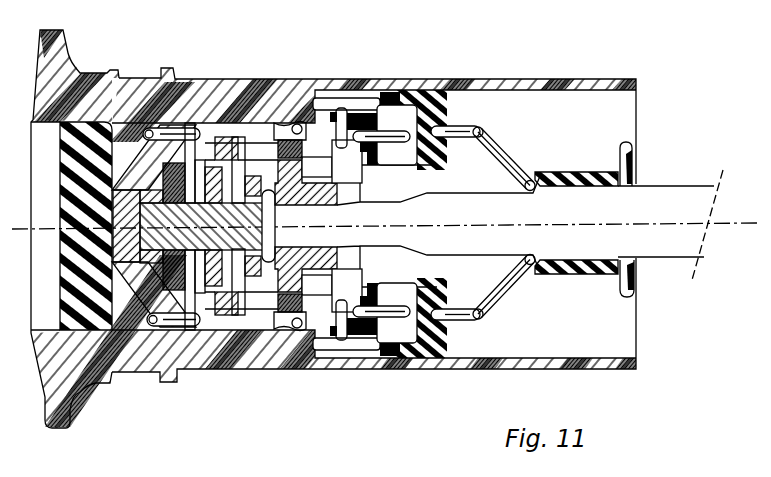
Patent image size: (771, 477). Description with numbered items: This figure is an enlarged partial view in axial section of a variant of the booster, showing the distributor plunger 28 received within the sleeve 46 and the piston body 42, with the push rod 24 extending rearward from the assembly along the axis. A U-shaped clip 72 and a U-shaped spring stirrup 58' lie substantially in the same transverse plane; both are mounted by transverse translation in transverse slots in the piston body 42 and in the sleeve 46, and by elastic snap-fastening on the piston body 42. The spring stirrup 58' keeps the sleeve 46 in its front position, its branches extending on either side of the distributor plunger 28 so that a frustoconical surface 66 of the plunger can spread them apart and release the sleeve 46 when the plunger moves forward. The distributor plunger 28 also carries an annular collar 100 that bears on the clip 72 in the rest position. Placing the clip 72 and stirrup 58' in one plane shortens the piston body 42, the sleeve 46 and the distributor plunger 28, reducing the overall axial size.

The push rod 24 is at (675, 186).
The distributor plunger 28 is at (170, 207).
The piston body 42 is at (187, 78).
The sleeve 46 is at (284, 112).
The spring stirrup 58' is at (326, 293).
The frustoconical surface 66 is at (263, 255).
The clip 72 is at (236, 137).
The annular collar 100 is at (207, 265).